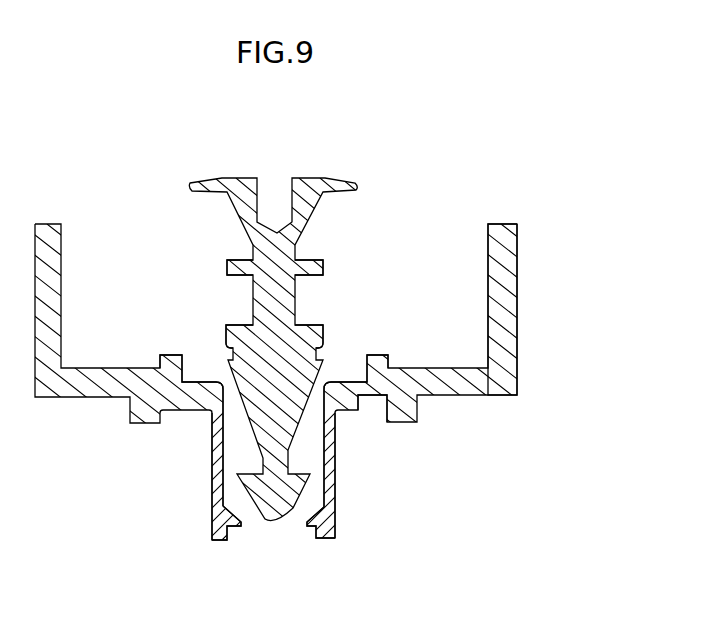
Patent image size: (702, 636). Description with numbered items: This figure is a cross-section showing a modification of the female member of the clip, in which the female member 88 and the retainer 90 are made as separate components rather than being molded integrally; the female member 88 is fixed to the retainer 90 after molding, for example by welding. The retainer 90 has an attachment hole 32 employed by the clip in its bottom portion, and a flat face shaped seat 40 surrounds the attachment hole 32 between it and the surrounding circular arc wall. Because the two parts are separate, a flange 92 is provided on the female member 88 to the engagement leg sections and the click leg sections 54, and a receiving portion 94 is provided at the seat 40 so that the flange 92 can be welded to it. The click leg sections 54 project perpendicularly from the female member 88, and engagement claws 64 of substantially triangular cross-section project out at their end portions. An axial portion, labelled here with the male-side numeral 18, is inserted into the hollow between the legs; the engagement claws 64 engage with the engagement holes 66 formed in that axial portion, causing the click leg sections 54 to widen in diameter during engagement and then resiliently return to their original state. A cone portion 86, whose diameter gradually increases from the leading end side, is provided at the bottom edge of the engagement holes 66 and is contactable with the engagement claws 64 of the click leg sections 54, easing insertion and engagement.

The pin 18 is at (373, 177).
The retainer 90 is at (525, 245).
The engagement holes 66 is at (228, 345).
The attachment hole 32 is at (224, 384).
The flange 92 is at (343, 388).
The seat 40 is at (452, 376).
The receiving portion 94 is at (374, 400).
The female member 88 is at (358, 467).
The cone portion 86 is at (210, 445).
The click leg sections 54 is at (211, 479).
The engagement claws 64 is at (230, 541).